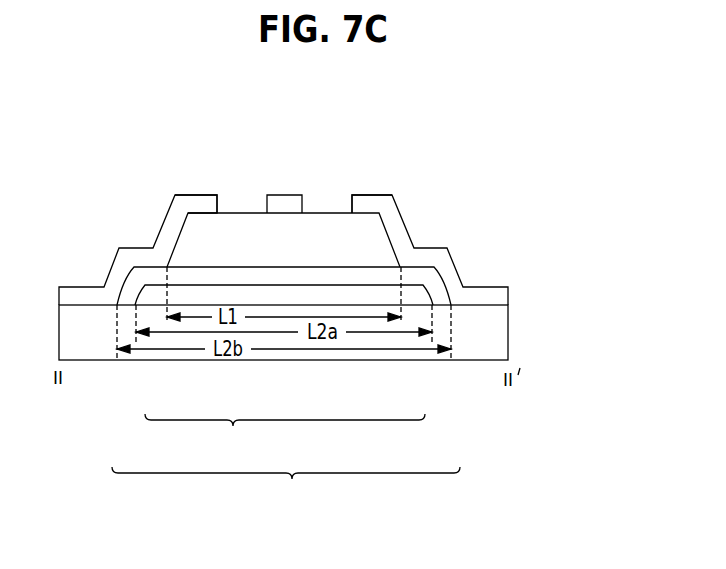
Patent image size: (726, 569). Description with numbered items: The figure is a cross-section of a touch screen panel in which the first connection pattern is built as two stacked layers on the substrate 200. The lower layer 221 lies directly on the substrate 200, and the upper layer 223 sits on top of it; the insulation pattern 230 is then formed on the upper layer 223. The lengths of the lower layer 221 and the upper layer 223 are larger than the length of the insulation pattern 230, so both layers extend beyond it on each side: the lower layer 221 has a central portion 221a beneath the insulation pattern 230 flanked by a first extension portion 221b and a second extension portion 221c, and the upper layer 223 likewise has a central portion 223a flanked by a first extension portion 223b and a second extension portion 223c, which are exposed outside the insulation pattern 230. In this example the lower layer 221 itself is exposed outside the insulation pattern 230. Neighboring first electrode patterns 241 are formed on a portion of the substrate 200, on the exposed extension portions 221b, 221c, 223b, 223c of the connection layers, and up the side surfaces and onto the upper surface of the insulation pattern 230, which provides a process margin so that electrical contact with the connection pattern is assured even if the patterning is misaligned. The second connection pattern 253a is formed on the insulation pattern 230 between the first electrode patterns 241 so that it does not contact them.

The substrate 200 is at (490, 335).
The lower layer 221 is at (284, 370).
The central portion of lower layer 221a is at (258, 295).
The first extension portion of lower layer 221b is at (152, 297).
The second extension portion of lower layer 221c is at (415, 295).
The upper layer 223 is at (286, 387).
The central portion of upper layer 223a is at (293, 277).
The first extension portion of upper layer 223b is at (130, 297).
The second extension portion of upper layer 223c is at (440, 297).
The insulation pattern 230 is at (377, 248).
The first electrode pattern 241 is at (199, 200).
The second connection pattern 253a is at (285, 200).